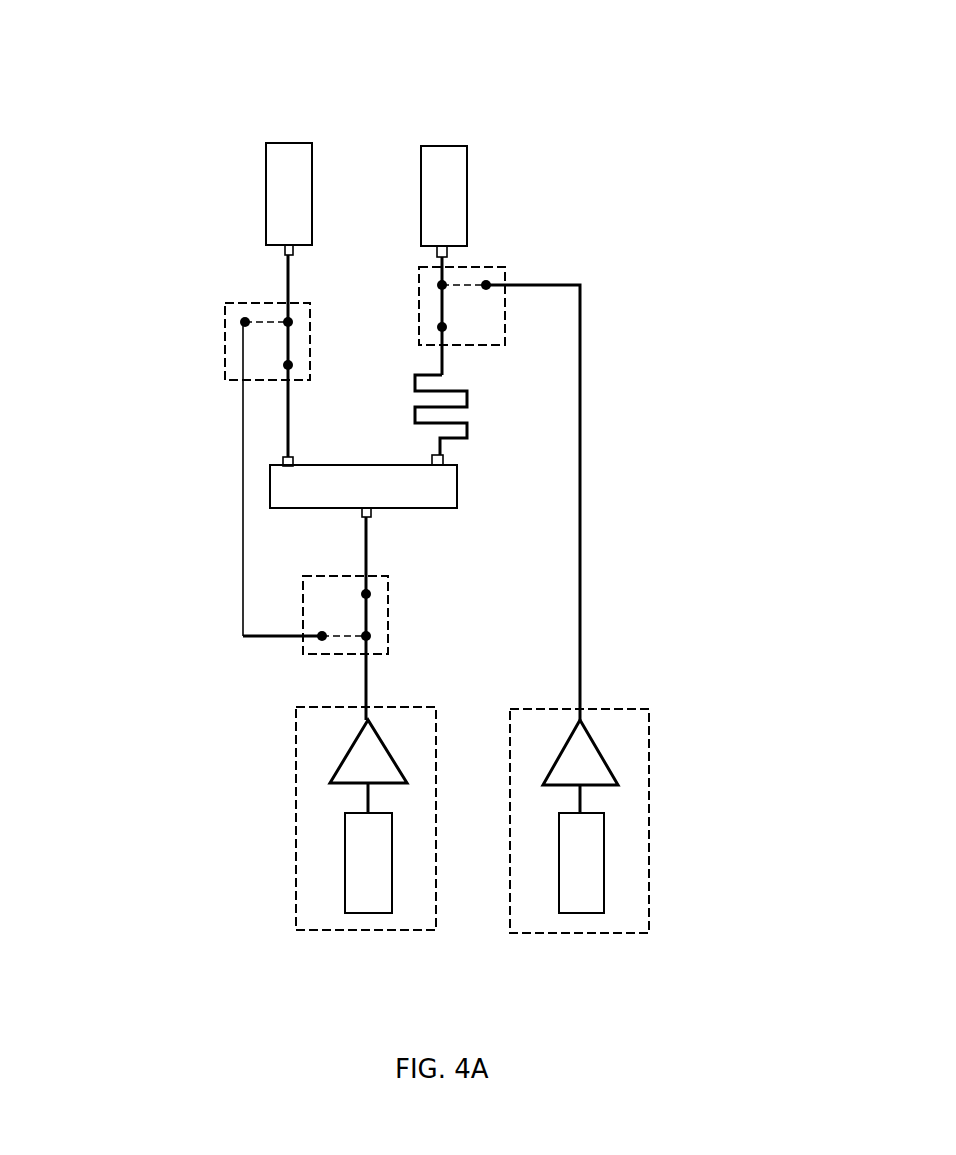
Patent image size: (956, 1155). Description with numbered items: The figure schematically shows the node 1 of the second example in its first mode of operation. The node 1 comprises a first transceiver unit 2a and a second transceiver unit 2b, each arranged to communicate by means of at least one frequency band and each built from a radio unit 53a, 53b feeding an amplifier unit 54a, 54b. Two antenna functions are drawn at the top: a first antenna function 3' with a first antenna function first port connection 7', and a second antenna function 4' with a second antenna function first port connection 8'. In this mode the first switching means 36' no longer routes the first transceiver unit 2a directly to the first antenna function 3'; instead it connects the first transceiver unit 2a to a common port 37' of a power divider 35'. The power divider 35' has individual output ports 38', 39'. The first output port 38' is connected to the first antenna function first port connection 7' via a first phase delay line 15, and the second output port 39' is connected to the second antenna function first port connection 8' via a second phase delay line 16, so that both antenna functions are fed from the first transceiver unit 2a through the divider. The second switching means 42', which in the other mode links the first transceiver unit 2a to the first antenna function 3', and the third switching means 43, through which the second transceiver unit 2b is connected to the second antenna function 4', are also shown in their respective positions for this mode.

The node 1 is at (212, 82).
The first antenna function 3' is at (204, 182).
The first antenna function first port connection 7' is at (187, 248).
The second antenna function first port connection 8' is at (413, 156).
The second antenna function 4' is at (457, 150).
The second switching means 42' is at (196, 341).
The third switching means 43 is at (505, 320).
The first phase delay line 15 is at (281, 417).
The second phase delay line 16 is at (407, 401).
The first output port 38' is at (189, 501).
The second output port 39' is at (553, 497).
The power divider 35' is at (363, 516).
The common port 37' is at (229, 552).
The first switching means 36' is at (489, 615).
The first transceiver unit 2a is at (320, 705).
The second transceiver unit 2b is at (625, 707).
The amplifier unit 54a is at (355, 768).
The amplifier unit 54b is at (585, 768).
The radio unit 53a is at (357, 860).
The radio unit 53b is at (585, 865).